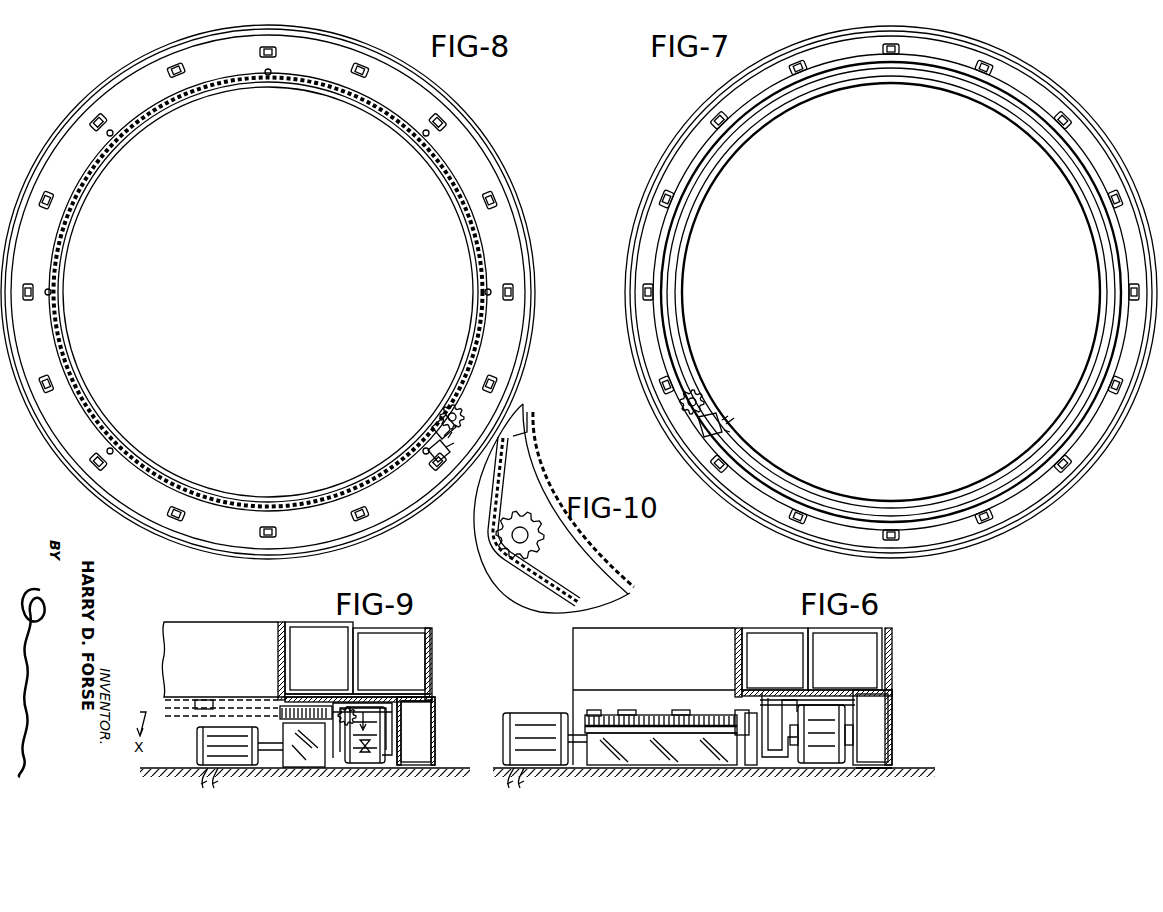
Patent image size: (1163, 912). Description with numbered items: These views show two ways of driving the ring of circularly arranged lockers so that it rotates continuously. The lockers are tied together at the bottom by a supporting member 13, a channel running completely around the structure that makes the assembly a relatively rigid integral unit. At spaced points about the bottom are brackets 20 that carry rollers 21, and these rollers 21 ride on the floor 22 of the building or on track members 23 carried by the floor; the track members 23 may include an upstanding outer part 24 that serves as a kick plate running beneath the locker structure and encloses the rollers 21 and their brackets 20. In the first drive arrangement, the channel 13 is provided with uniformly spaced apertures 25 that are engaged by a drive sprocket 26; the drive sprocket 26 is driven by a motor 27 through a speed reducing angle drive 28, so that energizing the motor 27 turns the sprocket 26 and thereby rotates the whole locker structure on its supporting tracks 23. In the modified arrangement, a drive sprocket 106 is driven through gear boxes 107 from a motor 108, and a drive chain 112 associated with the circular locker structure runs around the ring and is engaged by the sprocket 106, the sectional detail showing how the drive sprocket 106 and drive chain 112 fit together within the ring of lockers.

In FIG. 7, the supporting member 13 is at (778, 490).
In FIG. 6, the supporting member 13 is at (754, 755).
In FIG. 8, the brackets 20 is at (262, 57).
In FIG. 7, the brackets 20 is at (887, 62).
In FIG. 9, the brackets 20 is at (398, 756).
In FIG. 6, the brackets 20 is at (852, 712).
In FIG. 8, the rollers 21 is at (96, 122).
In FIG. 7, the rollers 21 is at (722, 120).
In FIG. 9, the rollers 21 is at (368, 762).
In FIG. 6, the rollers 21 is at (848, 752).
In FIG. 9, the floor 22 is at (446, 770).
In FIG. 6, the floor 22 is at (927, 770).
In FIG. 6, the track members 23 is at (860, 770).
In FIG. 9, the upstanding outer part 24 is at (437, 733).
In FIG. 6, the upstanding outer part 24 is at (892, 732).
In FIG. 6, the apertures 25 is at (598, 710).
In FIG. 7, the drive sprocket 26 is at (706, 400).
In FIG. 6, the drive sprocket 26 is at (660, 716).
In FIG. 7, the motor 27 is at (700, 432).
In FIG. 6, the motor 27 is at (530, 715).
In FIG. 6, the speed reducing angle drive 28 is at (662, 766).
In FIG. 8, the drive sprocket 106 is at (444, 410).
In FIG. 10, the drive sprocket 106 is at (530, 515).
In FIG. 9, the drive sprocket 106 is at (350, 709).
In FIG. 8, the gear boxes 107 is at (436, 424).
In FIG. 9, the gear boxes 107 is at (312, 762).
In FIG. 8, the motor 108 is at (432, 458).
In FIG. 9, the motor 108 is at (222, 760).
In FIG. 8, the drive chain 112 is at (314, 500).
In FIG. 10, the drive chain 112 is at (548, 590).
In FIG. 9, the drive chain 112 is at (306, 706).